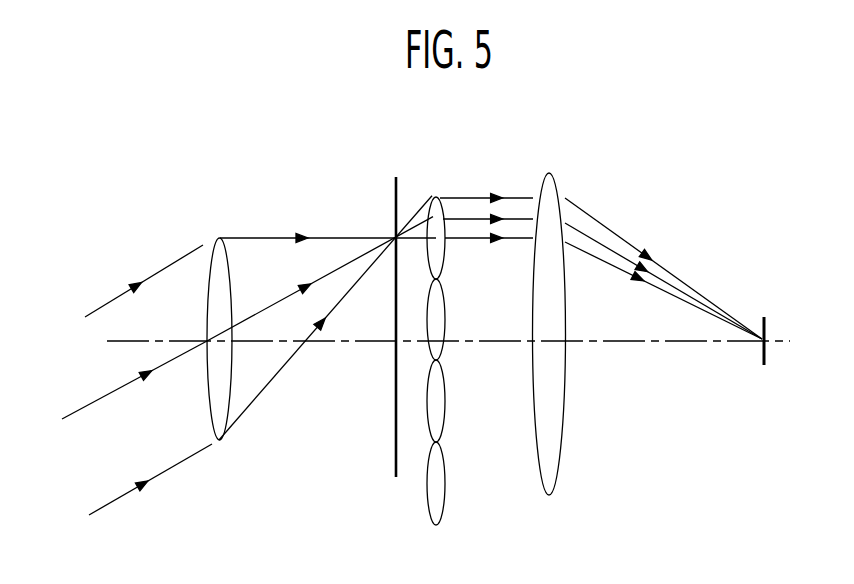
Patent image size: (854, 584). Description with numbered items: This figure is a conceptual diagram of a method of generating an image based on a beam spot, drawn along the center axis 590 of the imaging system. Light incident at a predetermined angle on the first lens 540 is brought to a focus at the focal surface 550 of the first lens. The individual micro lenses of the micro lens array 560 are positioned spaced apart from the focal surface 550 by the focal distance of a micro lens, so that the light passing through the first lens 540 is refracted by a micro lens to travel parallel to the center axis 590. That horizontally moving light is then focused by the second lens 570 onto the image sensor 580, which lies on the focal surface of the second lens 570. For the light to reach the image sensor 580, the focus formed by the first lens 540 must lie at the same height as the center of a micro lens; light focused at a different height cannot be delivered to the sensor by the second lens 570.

The first lens 540 is at (220, 238).
The focal surface 550 is at (396, 177).
The micro lens array 560 is at (436, 197).
The second lens 570 is at (549, 173).
The image sensor 580 is at (764, 317).
The center axis 590 is at (665, 345).